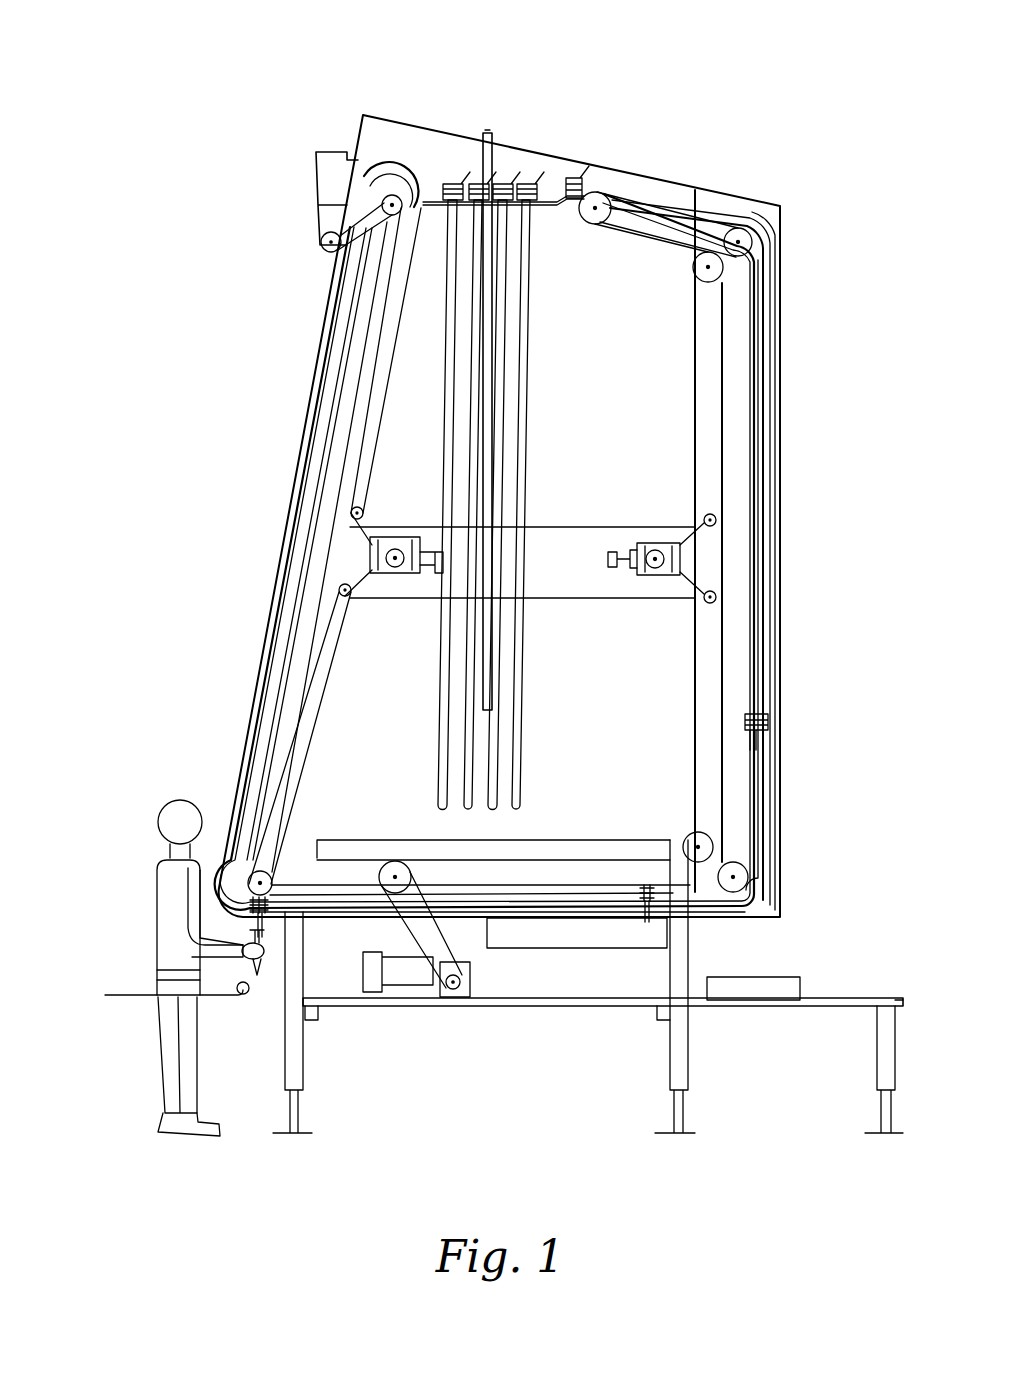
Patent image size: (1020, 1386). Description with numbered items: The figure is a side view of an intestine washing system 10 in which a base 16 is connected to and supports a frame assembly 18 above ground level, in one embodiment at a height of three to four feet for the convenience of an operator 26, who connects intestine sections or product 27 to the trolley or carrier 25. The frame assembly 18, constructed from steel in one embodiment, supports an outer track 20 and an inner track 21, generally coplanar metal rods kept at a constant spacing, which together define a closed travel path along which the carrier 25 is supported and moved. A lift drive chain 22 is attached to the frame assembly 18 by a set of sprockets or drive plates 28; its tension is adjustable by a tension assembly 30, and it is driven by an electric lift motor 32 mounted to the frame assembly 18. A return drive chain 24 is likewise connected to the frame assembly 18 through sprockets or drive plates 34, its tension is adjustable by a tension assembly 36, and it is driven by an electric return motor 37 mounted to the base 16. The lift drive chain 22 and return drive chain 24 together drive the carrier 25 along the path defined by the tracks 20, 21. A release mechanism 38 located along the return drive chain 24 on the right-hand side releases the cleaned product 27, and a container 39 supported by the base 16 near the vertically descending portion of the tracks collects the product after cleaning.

The intestine washing system 10 is at (168, 322).
The base 16 is at (570, 1018).
The frame assembly 18 is at (590, 243).
The outer track 20 is at (782, 212).
The inner track 21 is at (722, 657).
The lift drive chain 22 is at (318, 682).
The return drive chain 24 is at (722, 412).
The carrier 25 is at (470, 182).
The operator 26 is at (165, 925).
The product 27 is at (456, 386).
The drive plates 28 is at (396, 195).
The tension assembly 30 is at (370, 547).
The electric lift motor 32 is at (311, 196).
The drive plates 34 is at (603, 192).
The tension assembly 36 is at (700, 548).
The electric return motor 37 is at (400, 992).
The release mechanism 38 is at (772, 726).
The container 39 is at (788, 978).